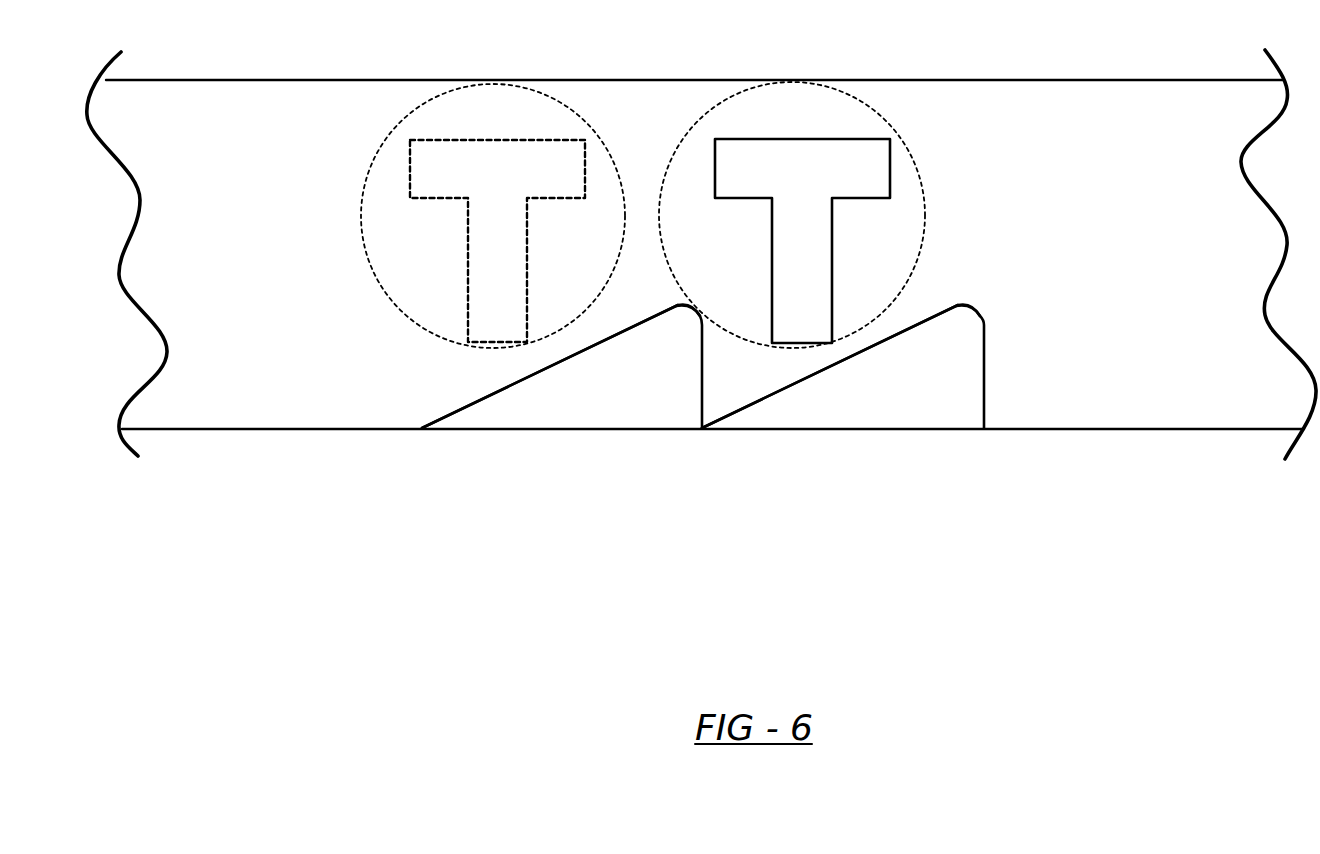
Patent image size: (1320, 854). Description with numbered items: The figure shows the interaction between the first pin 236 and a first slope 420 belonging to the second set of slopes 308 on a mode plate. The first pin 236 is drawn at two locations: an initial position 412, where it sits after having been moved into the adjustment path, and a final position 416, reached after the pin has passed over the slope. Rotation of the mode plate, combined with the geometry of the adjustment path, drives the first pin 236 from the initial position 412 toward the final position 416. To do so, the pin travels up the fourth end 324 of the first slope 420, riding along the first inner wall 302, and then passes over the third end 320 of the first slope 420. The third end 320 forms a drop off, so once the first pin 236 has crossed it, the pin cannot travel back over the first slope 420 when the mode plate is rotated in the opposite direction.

The first inner wall 302 is at (1064, 211).
The initial position 412 is at (370, 160).
The final position 416 is at (934, 180).
The first pin 236 is at (468, 322).
The second set of slopes 308 is at (702, 398).
The third end 320 is at (680, 309).
The fourth end 324 is at (455, 424).
The first slope 420 is at (580, 415).